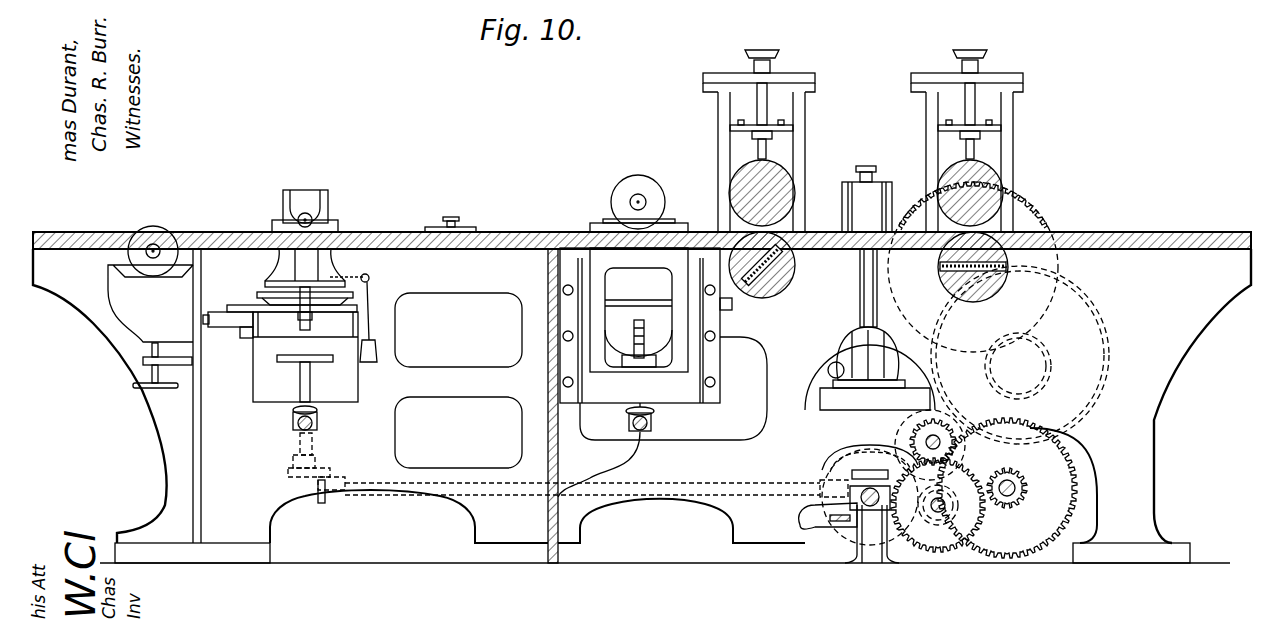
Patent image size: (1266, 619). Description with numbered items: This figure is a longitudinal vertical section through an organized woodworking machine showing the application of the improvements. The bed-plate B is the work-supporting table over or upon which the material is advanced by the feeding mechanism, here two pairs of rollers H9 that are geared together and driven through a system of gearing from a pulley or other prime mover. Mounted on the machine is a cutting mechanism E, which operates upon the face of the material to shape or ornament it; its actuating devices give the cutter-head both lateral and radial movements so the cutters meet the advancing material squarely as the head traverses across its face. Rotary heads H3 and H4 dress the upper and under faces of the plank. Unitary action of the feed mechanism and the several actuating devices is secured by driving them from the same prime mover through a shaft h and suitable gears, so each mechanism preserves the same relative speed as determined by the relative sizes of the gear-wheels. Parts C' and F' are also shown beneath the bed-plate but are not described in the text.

The bed-plate B is at (1100, 232).
The cutting mechanism E is at (330, 205).
The rotary head H4 is at (155, 229).
The rotary head H3 is at (645, 168).
The rollers H9 is at (790, 186).
The bracket C' is at (867, 199).
The bearing F' is at (316, 427).
The shaft h is at (308, 478).